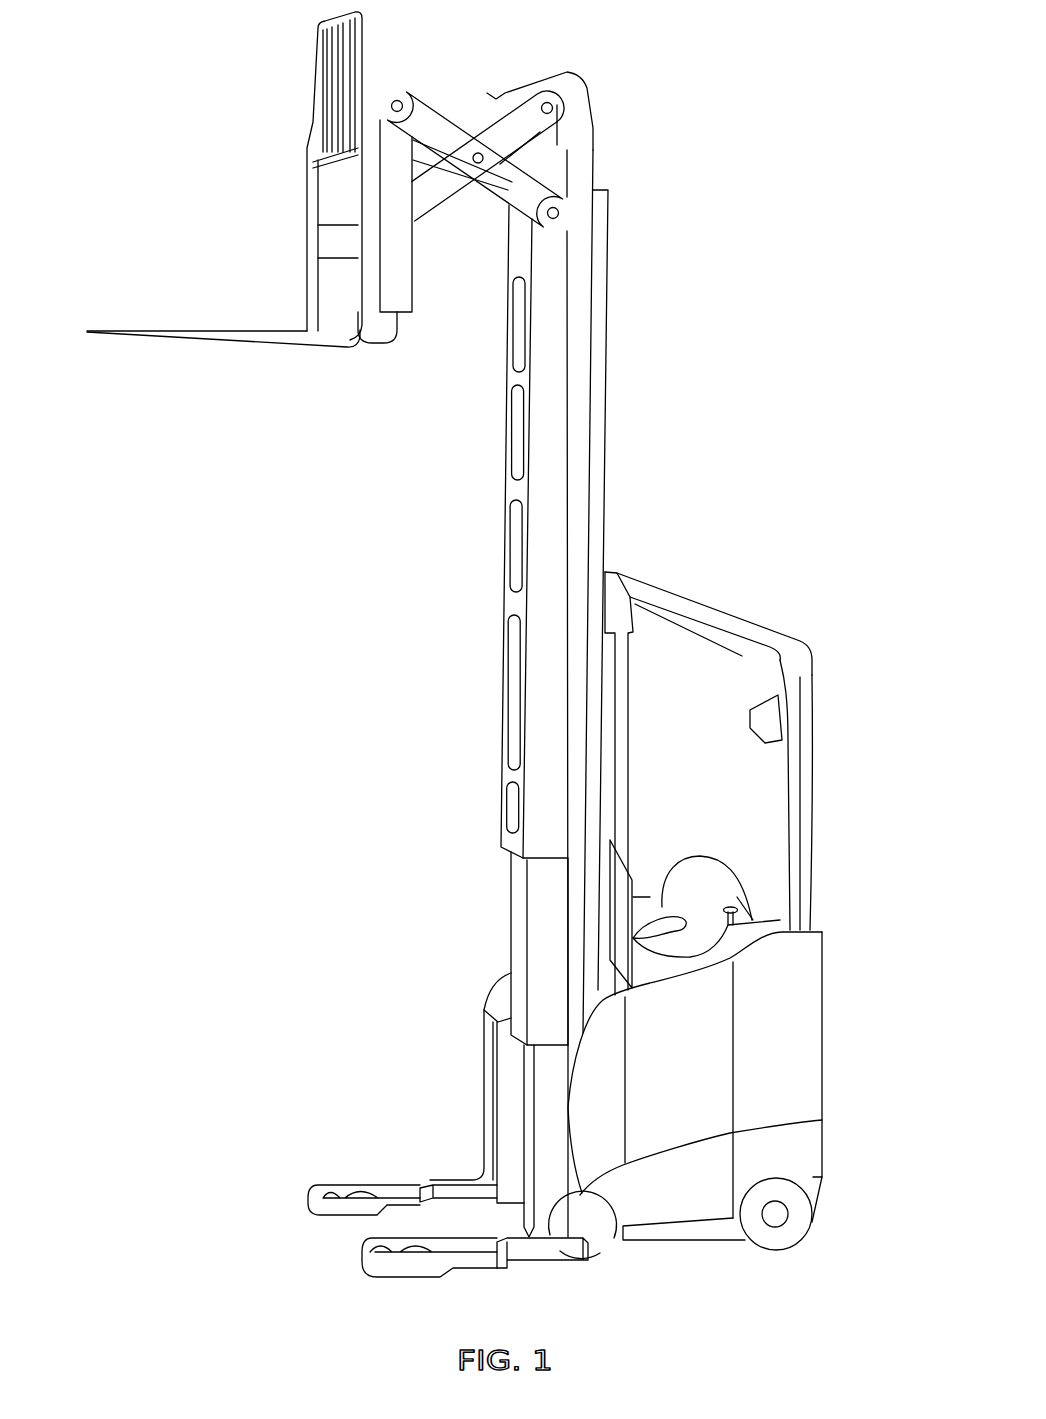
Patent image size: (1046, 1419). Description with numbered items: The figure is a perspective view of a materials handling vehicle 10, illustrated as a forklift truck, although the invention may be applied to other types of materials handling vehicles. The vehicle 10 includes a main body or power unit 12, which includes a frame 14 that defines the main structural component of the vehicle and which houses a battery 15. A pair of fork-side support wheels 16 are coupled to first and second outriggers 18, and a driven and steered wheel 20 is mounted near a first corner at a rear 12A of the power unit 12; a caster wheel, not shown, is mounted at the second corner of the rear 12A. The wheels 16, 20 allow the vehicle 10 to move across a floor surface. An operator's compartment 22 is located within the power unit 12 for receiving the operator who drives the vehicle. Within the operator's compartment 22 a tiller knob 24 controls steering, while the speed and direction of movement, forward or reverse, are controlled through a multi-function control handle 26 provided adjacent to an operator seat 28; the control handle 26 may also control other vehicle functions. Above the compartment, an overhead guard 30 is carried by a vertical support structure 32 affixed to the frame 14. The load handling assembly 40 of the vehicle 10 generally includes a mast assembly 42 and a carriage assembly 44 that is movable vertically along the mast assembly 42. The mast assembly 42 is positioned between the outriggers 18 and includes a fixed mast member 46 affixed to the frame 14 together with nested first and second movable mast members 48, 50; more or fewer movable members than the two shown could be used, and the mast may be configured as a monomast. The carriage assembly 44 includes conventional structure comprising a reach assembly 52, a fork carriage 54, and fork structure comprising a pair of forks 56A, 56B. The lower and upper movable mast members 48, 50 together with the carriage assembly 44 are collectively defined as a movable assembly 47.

The materials handling vehicle 10 is at (708, 210).
The power unit 12 is at (837, 958).
The rear of the power unit 12A is at (824, 1133).
The frame 14 is at (824, 1000).
The battery 15 is at (705, 1062).
The fork-side support wheels 16 is at (333, 1217).
The outriggers 18 is at (395, 1198).
The driven and steered wheel 20 is at (814, 1228).
The operator's compartment 22 is at (705, 663).
The tiller knob 24 is at (737, 897).
The multi-function control handle 26 is at (662, 898).
The operator seat 28 is at (705, 880).
The overhead guard 30 is at (747, 623).
The vertical support structure 32 is at (810, 750).
The load handling assembly 40 is at (288, 442).
The mast assembly 42 is at (515, 575).
The carriage assembly 44 is at (420, 80).
The fixed mast member 46 is at (527, 1145).
The movable assembly 47 is at (610, 365).
The first movable mast member 48 is at (548, 940).
The second movable mast member 50 is at (500, 512).
The reach assembly 52 is at (462, 213).
The fork carriage 54 is at (293, 220).
The fork 56A is at (287, 347).
The fork 56B is at (147, 330).